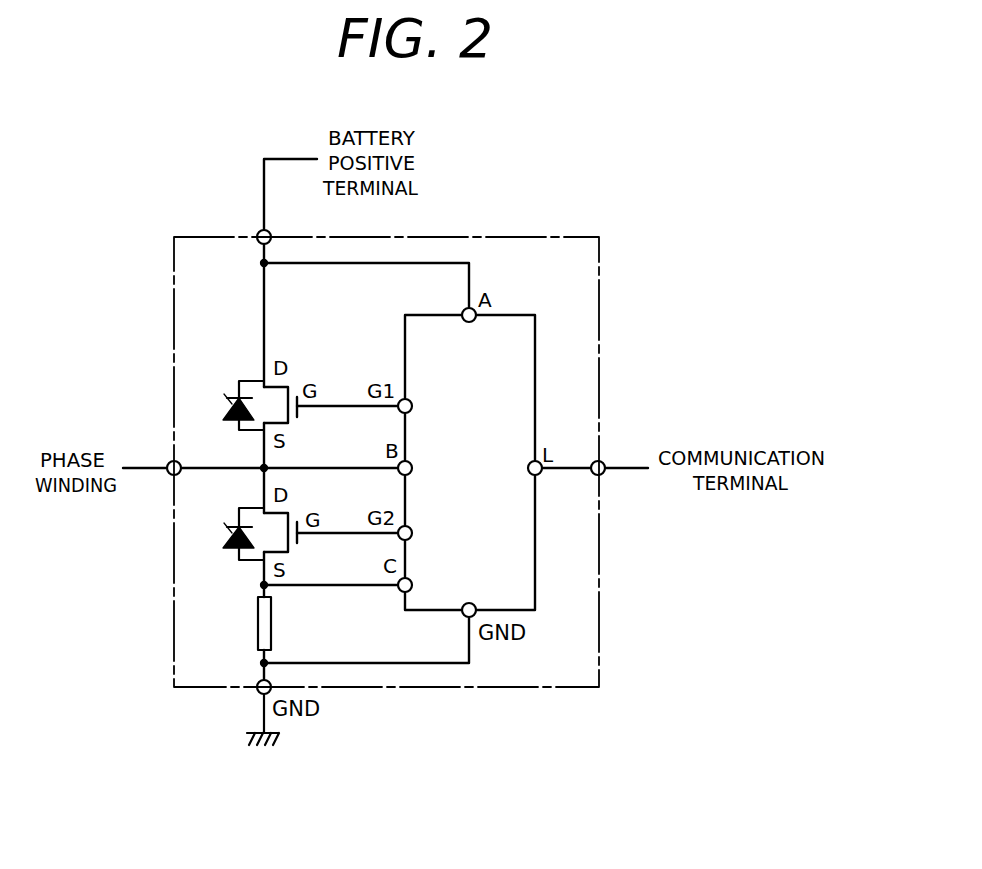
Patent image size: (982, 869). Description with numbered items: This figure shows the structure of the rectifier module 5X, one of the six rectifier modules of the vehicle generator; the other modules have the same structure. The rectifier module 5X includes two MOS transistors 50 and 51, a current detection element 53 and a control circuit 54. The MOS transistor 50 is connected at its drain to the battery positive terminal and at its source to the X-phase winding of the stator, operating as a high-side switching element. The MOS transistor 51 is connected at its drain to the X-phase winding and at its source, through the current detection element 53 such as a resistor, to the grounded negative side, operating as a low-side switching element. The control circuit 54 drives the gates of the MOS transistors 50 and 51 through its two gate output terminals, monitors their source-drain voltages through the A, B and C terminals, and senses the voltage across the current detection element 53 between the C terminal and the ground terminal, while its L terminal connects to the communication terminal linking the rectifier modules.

The MOS transistor 50 is at (247, 379).
The MOS transistor 51 is at (242, 560).
The current detection element 53 is at (260, 641).
The control circuit 54 is at (523, 314).
The rectifier module 5X is at (599, 237).